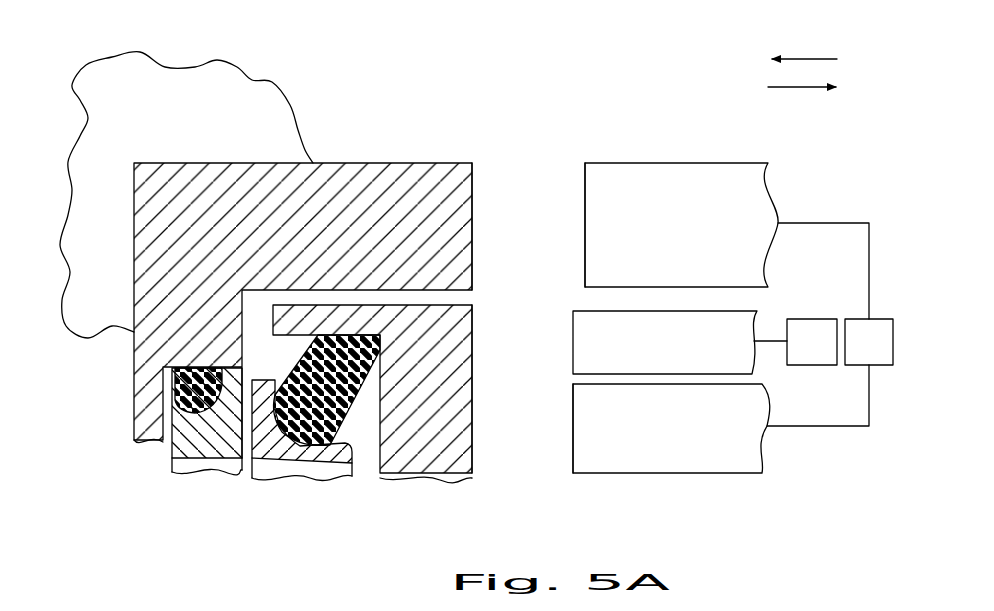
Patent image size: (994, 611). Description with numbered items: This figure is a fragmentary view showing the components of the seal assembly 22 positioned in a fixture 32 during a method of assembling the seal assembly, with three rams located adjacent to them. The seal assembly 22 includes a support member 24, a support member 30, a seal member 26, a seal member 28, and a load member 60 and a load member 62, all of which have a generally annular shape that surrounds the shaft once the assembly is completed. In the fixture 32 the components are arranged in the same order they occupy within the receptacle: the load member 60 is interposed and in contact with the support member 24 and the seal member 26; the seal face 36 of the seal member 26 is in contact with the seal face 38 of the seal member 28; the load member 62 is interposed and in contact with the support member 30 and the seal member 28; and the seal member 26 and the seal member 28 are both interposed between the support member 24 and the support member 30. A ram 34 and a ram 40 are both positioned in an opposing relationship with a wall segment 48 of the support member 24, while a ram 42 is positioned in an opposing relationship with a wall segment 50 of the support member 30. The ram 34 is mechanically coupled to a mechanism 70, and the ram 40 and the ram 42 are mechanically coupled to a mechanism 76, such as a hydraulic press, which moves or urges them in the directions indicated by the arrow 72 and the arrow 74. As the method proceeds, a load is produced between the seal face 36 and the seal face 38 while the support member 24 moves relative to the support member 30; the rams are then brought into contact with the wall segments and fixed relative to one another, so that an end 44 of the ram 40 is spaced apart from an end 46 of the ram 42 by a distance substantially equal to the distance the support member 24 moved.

The seal assembly 22 is at (530, 132).
The support member 24 is at (473, 316).
The seal member 26 is at (333, 458).
The seal member 28 is at (205, 455).
The support member 30 is at (400, 166).
The fixture 32 is at (163, 68).
The ram 34 is at (768, 308).
The seal face 36 is at (255, 376).
The seal face 38 is at (245, 450).
The ram 40 is at (718, 462).
The ram 42 is at (694, 165).
The end 44 is at (572, 440).
The end 46 is at (585, 185).
The wall segment 48 is at (473, 400).
The wall segment 50 is at (473, 189).
The load member 60 is at (352, 425).
The load member 62 is at (170, 392).
The mechanism 70 is at (826, 358).
The arrow 72 is at (812, 59).
The arrow 74 is at (785, 88).
The mechanism 76 is at (883, 358).